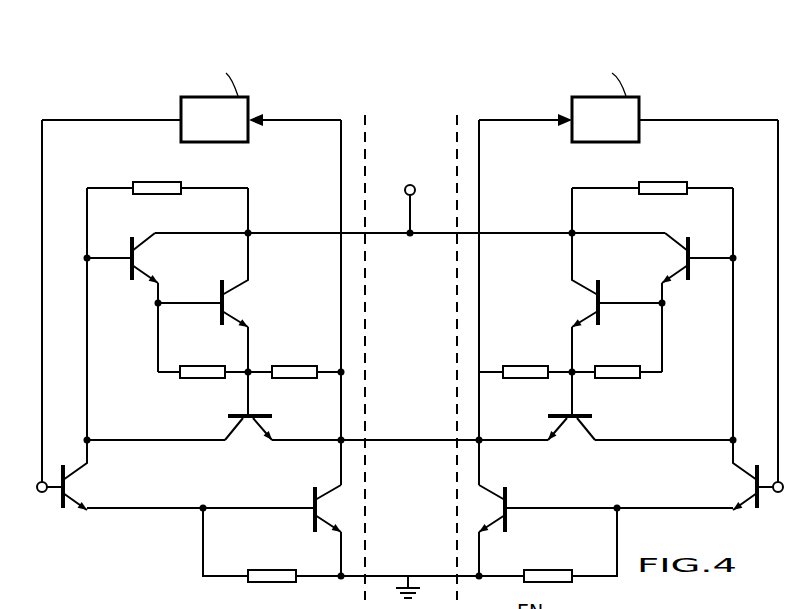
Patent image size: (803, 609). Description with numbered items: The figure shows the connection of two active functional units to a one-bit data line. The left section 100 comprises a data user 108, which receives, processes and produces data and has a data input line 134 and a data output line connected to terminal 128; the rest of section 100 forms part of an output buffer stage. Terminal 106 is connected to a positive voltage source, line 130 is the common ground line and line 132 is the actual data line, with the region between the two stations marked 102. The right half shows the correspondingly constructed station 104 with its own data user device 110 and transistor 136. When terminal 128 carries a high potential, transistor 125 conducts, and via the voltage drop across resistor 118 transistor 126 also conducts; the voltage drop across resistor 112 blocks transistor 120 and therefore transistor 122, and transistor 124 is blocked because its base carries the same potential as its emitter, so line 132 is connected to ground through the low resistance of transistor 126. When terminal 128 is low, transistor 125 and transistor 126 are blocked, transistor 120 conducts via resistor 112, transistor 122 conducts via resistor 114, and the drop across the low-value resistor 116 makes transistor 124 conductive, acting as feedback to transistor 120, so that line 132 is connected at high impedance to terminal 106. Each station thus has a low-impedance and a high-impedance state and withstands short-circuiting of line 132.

The section 100 is at (295, 110).
The transmission bus region 102 is at (411, 357).
The station 104 is at (525, 110).
The terminal 106 is at (410, 184).
The data user 108 is at (225, 132).
The data user device 110 is at (598, 127).
The resistor 112 is at (150, 181).
The resistor 114 is at (189, 380).
The resistor 116 is at (290, 365).
The resistor 118 is at (268, 569).
The transistor 120 is at (132, 268).
The transistor 122 is at (220, 316).
The transistor 124 is at (268, 414).
The transistor 125 is at (61, 507).
The transistor 126 is at (313, 497).
The terminal 128 is at (45, 481).
The common ground line 130 is at (400, 572).
The data line 132 is at (400, 437).
The data input line 134 is at (340, 148).
The transistor 136 is at (508, 497).